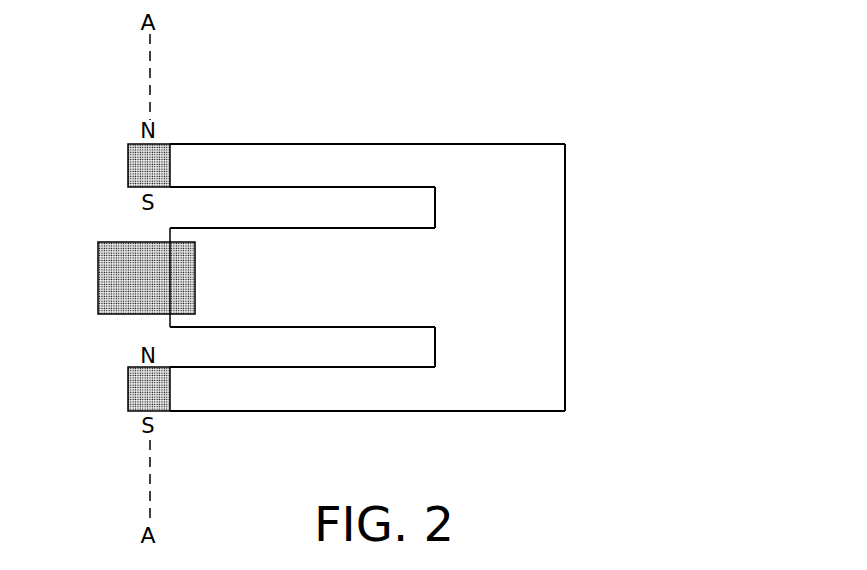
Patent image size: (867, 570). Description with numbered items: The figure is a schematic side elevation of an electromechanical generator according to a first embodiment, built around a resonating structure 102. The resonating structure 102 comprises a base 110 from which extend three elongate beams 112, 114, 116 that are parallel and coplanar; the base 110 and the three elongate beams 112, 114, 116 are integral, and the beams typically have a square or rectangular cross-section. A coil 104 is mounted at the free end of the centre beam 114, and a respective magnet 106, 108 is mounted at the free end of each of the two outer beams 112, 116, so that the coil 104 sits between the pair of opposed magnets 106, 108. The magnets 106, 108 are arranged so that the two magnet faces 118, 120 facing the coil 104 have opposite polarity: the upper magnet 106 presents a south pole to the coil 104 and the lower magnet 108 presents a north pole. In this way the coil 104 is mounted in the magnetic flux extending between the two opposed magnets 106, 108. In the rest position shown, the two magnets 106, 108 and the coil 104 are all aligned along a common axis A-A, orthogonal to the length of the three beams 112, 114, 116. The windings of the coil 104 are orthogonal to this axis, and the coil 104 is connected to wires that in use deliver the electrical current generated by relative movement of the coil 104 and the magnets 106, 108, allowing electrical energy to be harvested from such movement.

The resonating structure 102 is at (438, 118).
The coil 104 is at (98, 279).
The upper magnet 106 is at (128, 166).
The lower magnet 108 is at (128, 392).
The base 110 is at (538, 158).
The outer elongate beam 112 is at (302, 158).
The centre beam 114 is at (302, 243).
The outer elongate beam 116 is at (303, 397).
The magnet face 118 is at (170, 190).
The magnet face 120 is at (160, 366).